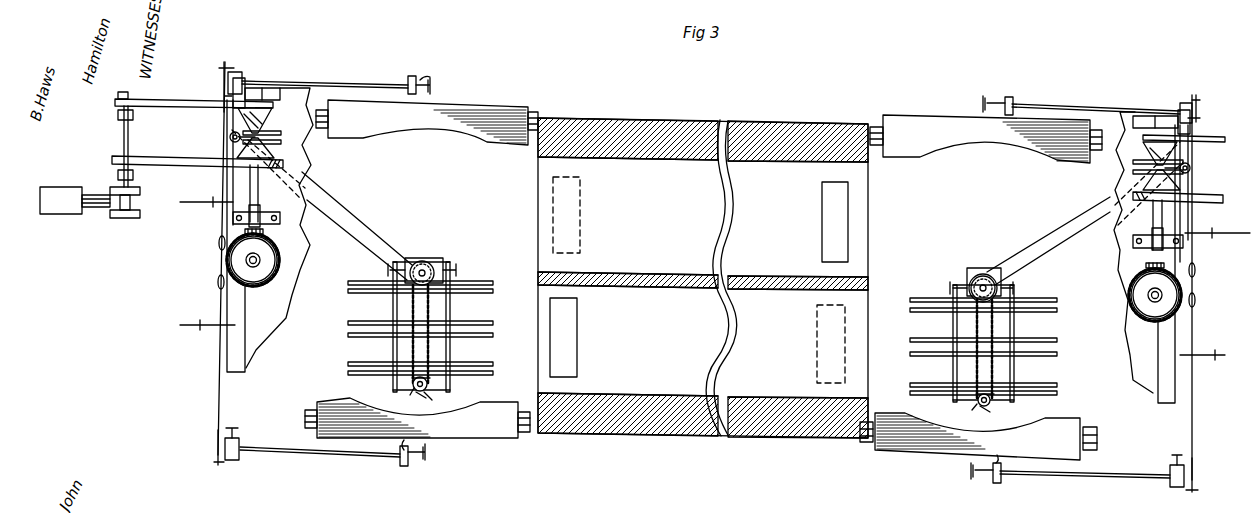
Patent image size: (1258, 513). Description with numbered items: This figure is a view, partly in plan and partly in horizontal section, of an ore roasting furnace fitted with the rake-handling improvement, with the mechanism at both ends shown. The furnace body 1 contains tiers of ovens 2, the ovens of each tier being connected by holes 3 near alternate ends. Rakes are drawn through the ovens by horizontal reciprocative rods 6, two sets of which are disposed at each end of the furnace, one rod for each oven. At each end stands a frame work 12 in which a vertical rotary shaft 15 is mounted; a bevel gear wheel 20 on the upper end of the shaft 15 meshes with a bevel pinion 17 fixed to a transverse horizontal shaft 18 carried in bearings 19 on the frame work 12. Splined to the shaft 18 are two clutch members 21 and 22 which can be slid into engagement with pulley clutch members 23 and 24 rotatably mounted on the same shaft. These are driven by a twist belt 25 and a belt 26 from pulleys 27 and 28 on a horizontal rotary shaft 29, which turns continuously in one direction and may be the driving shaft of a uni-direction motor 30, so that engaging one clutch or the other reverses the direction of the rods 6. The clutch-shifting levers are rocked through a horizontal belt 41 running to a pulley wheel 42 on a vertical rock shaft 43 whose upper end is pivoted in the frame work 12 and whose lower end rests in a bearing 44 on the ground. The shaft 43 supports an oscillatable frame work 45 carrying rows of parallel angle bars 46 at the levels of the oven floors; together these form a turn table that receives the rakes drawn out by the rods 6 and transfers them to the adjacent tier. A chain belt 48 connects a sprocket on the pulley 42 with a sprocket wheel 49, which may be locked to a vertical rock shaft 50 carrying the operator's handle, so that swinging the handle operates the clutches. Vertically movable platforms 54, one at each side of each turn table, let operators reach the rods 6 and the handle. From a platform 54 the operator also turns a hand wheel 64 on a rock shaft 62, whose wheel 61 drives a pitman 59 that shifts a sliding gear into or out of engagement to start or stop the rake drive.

The furnace body 1 is at (655, 120).
The ovens 2 is at (683, 152).
The holes 3 is at (822, 198).
The reciprocative rods 6 is at (200, 203).
The frame work 12 is at (278, 300).
The vertical rotary shaft 15 is at (260, 265).
The bevel pinion 17 is at (268, 236).
The transverse horizontal shaft 18 is at (258, 193).
The bearings 19 is at (1160, 115).
The bevel gear wheel 20 is at (272, 258).
The clutch member 21 is at (266, 116).
The clutch member 22 is at (272, 147).
The pulley clutch member 23 is at (278, 96).
The pulley clutch member 24 is at (268, 176).
The twist belt 25 is at (192, 100).
The belt 26 is at (205, 158).
The pulley 27 is at (118, 110).
The pulley 28 is at (118, 160).
The horizontal rotary shaft 29 is at (129, 130).
The uni-direction motor 30 is at (70, 215).
The horizontal belt 41 is at (360, 218).
The pulley wheel 42 is at (426, 268).
The vertical rock shaft 43 is at (437, 267).
The bearings 44 is at (970, 268).
The oscillatable frame work 45 is at (450, 318).
The angle bars 46 is at (493, 335).
The chain belt 48 is at (412, 310).
The sprocket wheel 49 is at (412, 388).
The vertical rock shaft 50 is at (430, 392).
The platform 54 is at (495, 112).
The pitman 59 is at (222, 185).
The wheel 61 is at (232, 70).
The rock shaft 62 is at (328, 82).
The hand wheel 64 is at (408, 78).